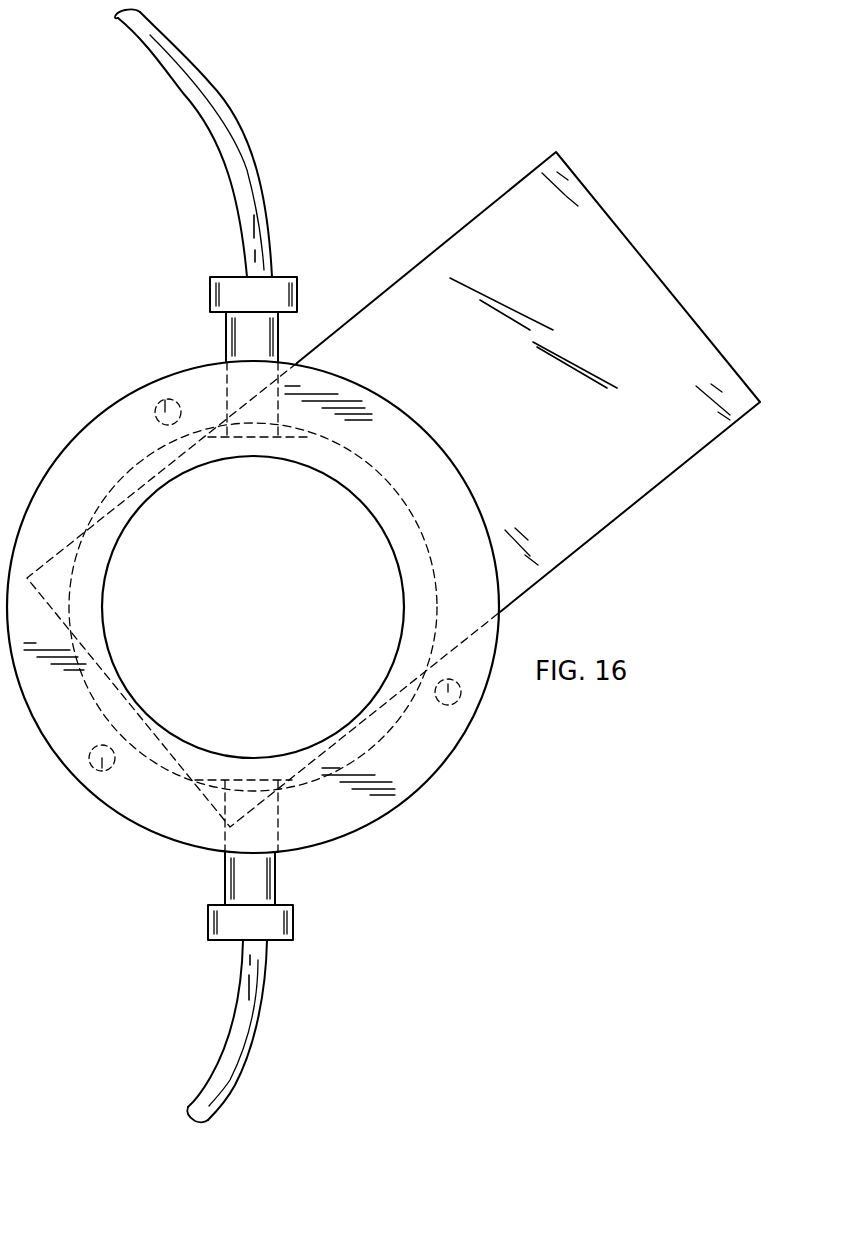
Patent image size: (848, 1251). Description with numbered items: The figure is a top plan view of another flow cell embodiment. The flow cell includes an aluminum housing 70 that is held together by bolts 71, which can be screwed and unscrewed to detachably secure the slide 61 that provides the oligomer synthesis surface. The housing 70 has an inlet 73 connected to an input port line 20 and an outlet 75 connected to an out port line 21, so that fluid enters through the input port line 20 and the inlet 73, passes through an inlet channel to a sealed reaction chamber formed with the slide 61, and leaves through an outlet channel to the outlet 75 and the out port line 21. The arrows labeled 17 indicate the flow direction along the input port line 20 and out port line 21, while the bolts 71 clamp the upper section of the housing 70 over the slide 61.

The aluminum housing 70 is at (80, 433).
The bolts 71 is at (165, 398).
The outlet 75 is at (280, 338).
The inlet 73 is at (276, 878).
The slide 61 is at (630, 507).
The out port line 21 is at (233, 128).
The input port line 20 is at (250, 1033).
The fluid flow 17 is at (253, 212).